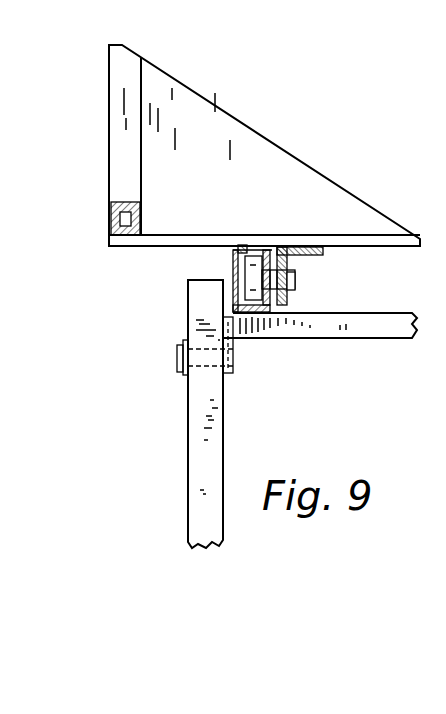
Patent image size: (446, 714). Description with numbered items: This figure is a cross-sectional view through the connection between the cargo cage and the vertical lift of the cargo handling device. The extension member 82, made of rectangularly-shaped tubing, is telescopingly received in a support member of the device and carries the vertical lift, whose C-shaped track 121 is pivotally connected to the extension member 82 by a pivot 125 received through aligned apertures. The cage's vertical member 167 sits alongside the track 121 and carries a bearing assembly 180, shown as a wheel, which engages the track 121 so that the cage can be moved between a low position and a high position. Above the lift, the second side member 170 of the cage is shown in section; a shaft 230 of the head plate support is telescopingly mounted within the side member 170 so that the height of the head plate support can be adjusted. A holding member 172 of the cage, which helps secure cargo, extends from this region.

The holding member 172 is at (109, 101).
The second side member 170 is at (112, 208).
The shaft 230 is at (141, 214).
The vertical member 167 is at (300, 250).
The track 121 is at (240, 250).
The bearing assembly 180 is at (295, 279).
The extension member 82 is at (193, 441).
The pivot 125 is at (177, 351).